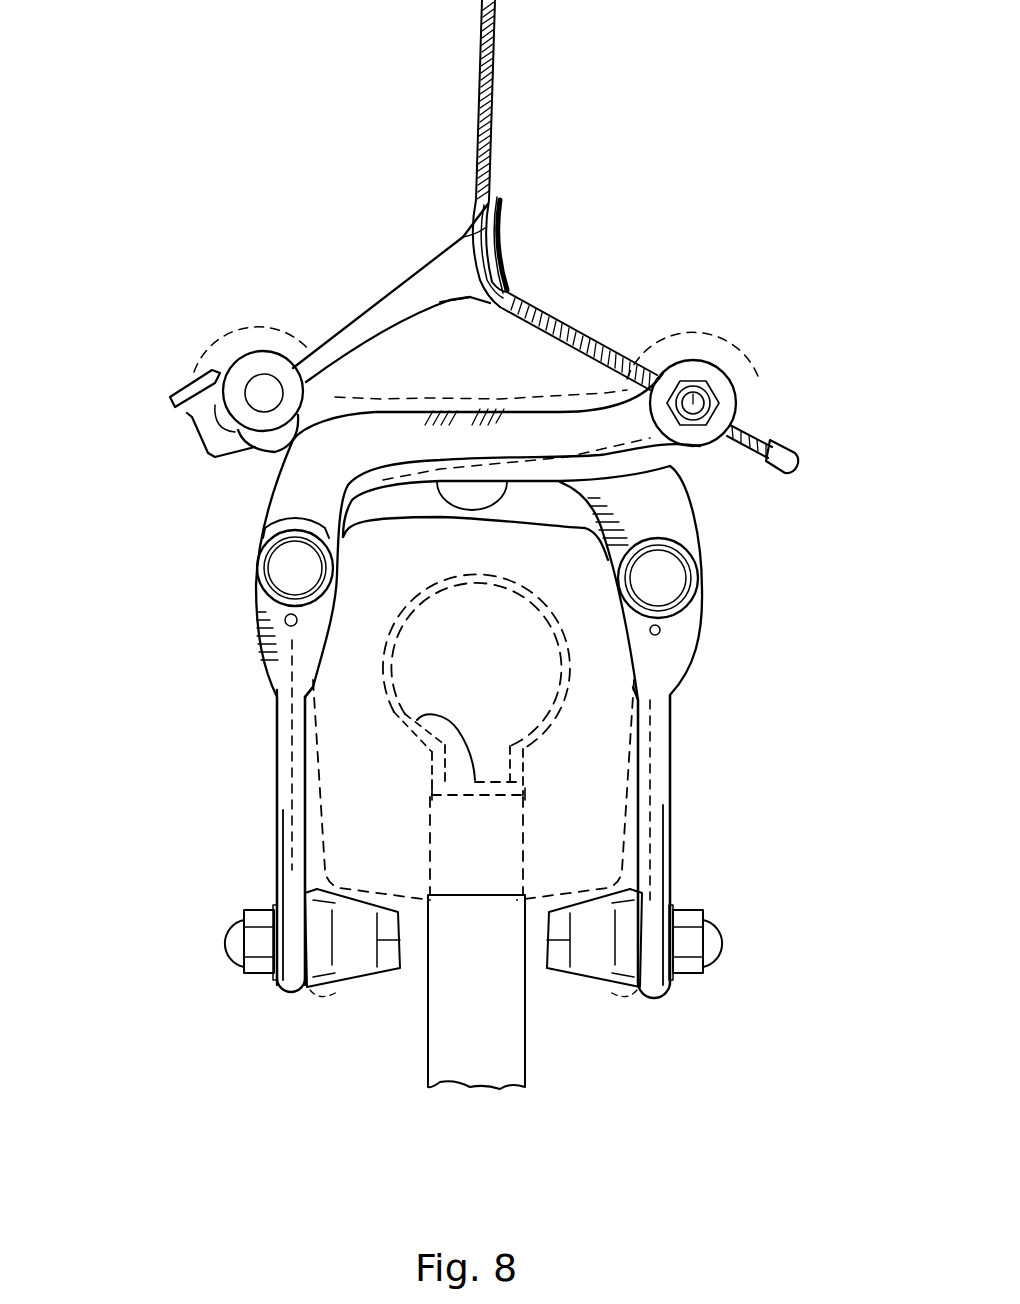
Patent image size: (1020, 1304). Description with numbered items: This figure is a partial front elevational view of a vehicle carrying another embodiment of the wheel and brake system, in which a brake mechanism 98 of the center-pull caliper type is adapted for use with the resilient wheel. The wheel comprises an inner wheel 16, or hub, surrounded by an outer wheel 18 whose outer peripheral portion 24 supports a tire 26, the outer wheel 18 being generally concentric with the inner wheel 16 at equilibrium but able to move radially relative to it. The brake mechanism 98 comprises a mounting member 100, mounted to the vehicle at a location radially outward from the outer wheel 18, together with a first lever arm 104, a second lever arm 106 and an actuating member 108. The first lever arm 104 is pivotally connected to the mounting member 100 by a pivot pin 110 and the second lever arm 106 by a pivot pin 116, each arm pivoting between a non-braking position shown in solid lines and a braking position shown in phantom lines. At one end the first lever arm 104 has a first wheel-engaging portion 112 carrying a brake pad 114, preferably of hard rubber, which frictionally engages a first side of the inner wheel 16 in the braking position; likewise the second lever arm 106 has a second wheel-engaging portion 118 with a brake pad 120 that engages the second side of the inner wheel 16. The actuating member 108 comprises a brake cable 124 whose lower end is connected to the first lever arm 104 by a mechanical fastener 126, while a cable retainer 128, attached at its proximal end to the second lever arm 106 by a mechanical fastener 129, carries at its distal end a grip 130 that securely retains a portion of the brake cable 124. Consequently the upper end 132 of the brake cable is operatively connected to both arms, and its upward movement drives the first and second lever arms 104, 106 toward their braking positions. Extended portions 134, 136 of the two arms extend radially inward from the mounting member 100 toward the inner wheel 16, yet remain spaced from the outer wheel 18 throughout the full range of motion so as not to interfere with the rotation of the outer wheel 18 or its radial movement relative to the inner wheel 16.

The inner wheel 16 is at (500, 1042).
The outer wheel 18 is at (527, 773).
The outer peripheral portion 24 is at (417, 720).
The tire 26 is at (503, 583).
The brake mechanism 98 is at (800, 655).
The mounting member 100 is at (405, 497).
The first lever arm 104 is at (597, 433).
The second lever arm 106 is at (317, 388).
The actuating member 108 is at (538, 147).
The pivot pin 110 is at (282, 578).
The first wheel-engaging portion 112 is at (273, 972).
The brake pad 114 is at (393, 955).
The pivot pin 116 is at (673, 577).
The second wheel-engaging portion 118 is at (620, 959).
The brake pad 120 is at (570, 975).
The brake cable 124 is at (548, 328).
The mechanical fastener 126 is at (707, 387).
The cable retainer 128 is at (390, 317).
The mechanical fastener 129 is at (266, 390).
The grip 130 is at (462, 232).
The upper end of the brake cable 132 is at (495, 63).
The extended portion 134 is at (277, 806).
The extended portion 136 is at (670, 807).